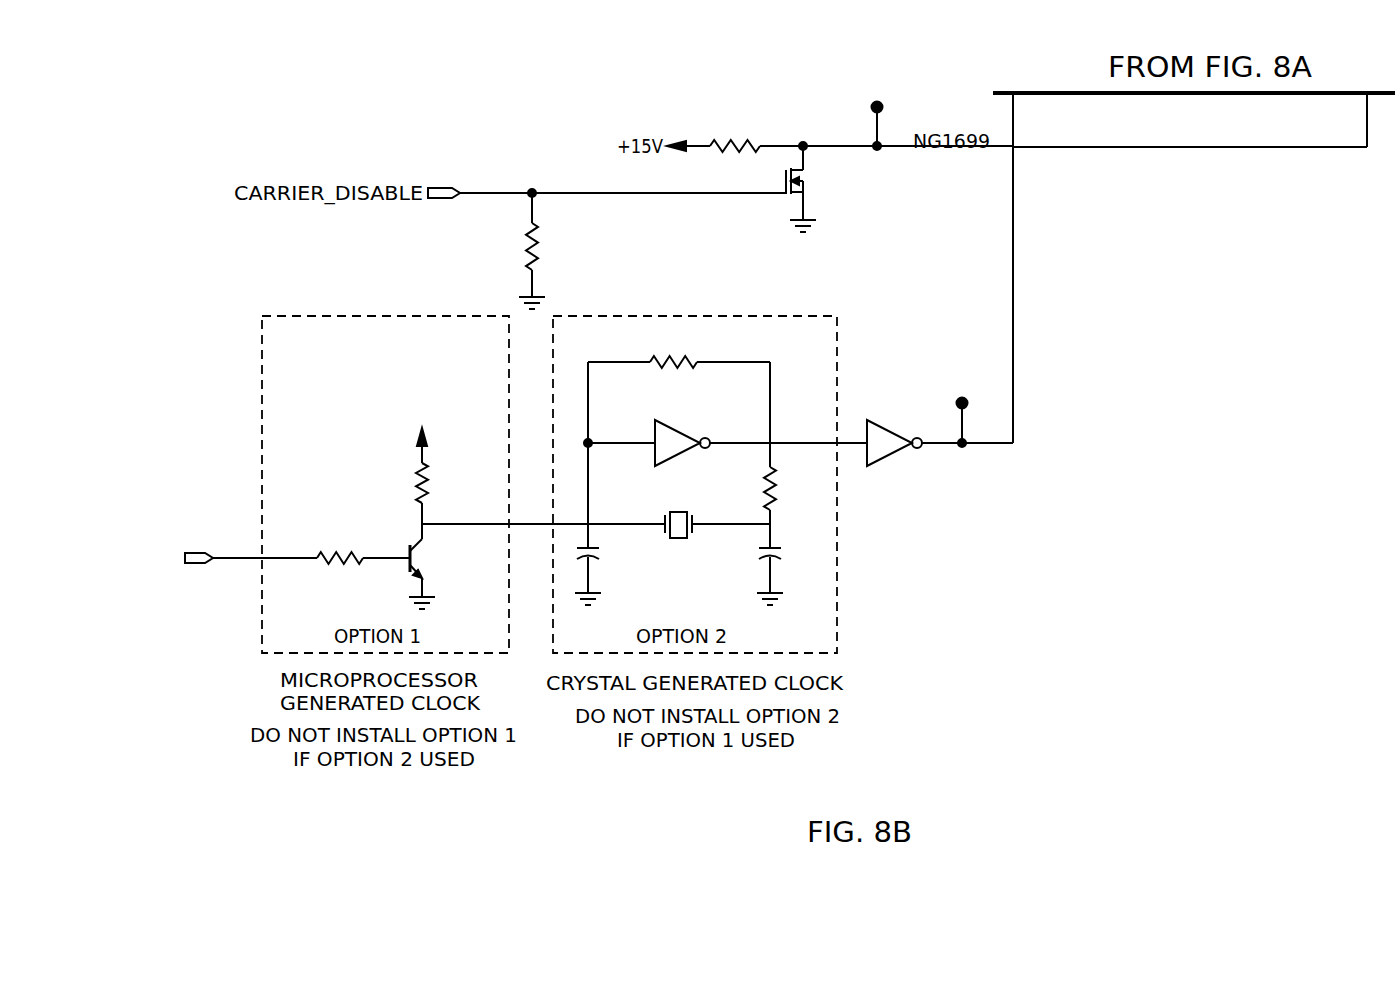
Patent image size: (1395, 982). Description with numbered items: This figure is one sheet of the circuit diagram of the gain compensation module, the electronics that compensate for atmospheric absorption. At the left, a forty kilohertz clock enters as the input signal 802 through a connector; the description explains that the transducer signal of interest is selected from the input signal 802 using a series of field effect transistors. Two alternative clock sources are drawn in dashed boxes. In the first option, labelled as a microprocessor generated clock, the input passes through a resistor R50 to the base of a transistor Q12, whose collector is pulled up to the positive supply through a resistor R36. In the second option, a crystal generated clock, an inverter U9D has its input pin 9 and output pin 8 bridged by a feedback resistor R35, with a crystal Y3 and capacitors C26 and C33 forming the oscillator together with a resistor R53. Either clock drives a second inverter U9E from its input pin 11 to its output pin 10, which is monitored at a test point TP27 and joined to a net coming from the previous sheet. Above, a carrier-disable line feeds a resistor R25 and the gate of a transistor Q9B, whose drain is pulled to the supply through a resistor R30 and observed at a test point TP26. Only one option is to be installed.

The input signal 802 is at (197, 553).
The resistor R30 15k R30 is at (736, 143).
The resistor R25 39k R25 is at (552, 251).
The resistor R50 3.3K R50 is at (342, 559).
The resistor R36 47K R36 is at (431, 463).
The resistor R35 10M R35 is at (679, 360).
The resistor R53 470K R53 is at (793, 495).
The MOSFET Q9B FDG6301N Q9B is at (843, 189).
The transistor Q12 2N2222 Q12 is at (445, 566).
The inverter U9D CD4069UBM U9D is at (684, 445).
The inverter U9E CD4069UBM U9E is at (924, 445).
The crystal Y3 40KHZ Y3 is at (679, 527).
The capacitor C26 33pF C26 is at (612, 563).
The capacitor C33 33pF C33 is at (795, 563).
The test point TP26 is at (893, 111).
The test point TP27 is at (981, 410).
The inverter U9D output pin 8 is at (735, 433).
The inverter U9D input pin 9 is at (621, 430).
The inverter U9E output pin 10 is at (962, 433).
The inverter U9E input pin 11 is at (818, 430).